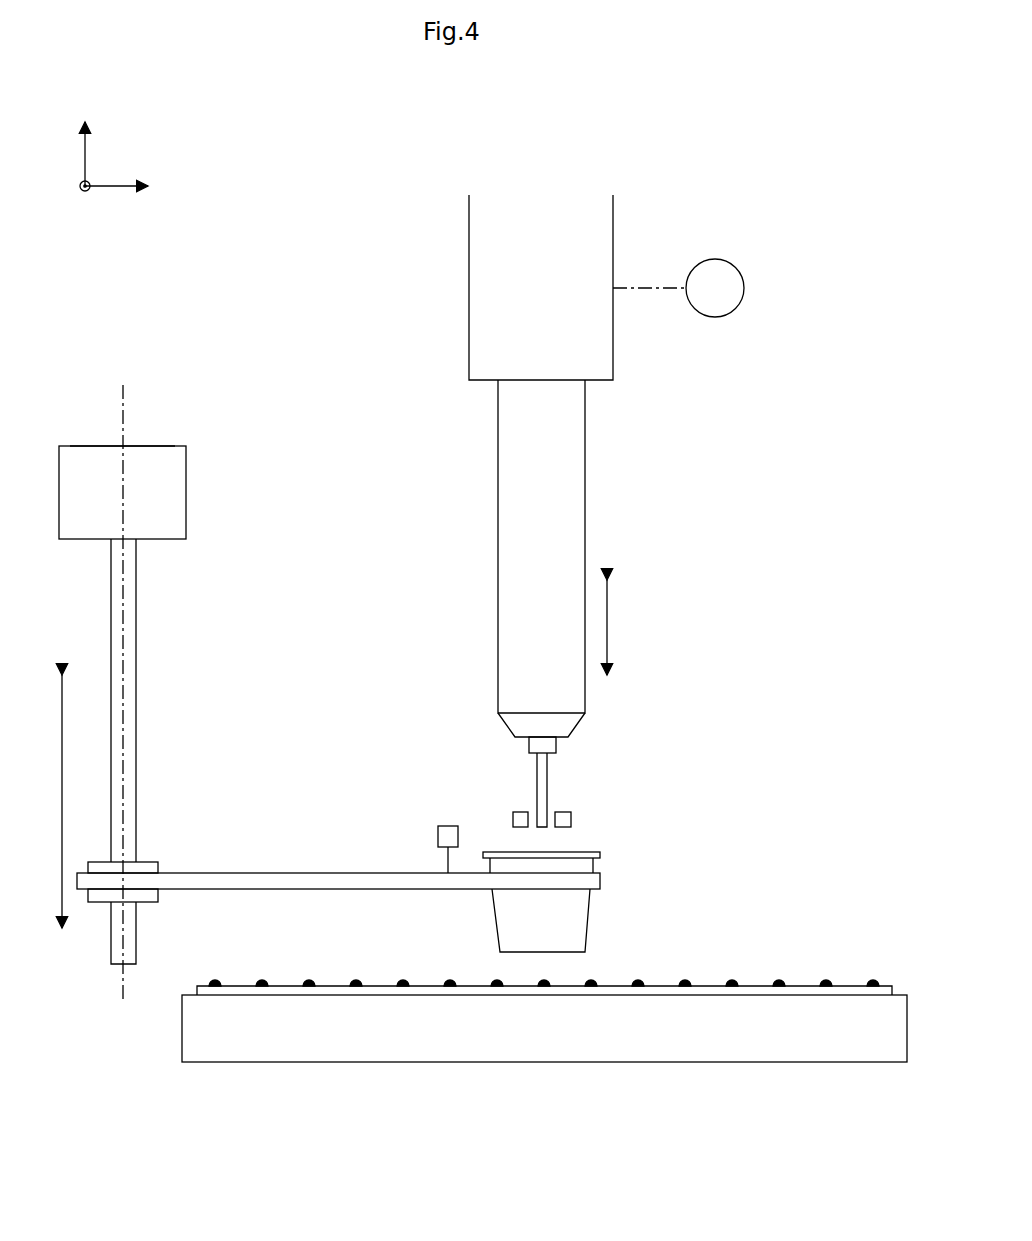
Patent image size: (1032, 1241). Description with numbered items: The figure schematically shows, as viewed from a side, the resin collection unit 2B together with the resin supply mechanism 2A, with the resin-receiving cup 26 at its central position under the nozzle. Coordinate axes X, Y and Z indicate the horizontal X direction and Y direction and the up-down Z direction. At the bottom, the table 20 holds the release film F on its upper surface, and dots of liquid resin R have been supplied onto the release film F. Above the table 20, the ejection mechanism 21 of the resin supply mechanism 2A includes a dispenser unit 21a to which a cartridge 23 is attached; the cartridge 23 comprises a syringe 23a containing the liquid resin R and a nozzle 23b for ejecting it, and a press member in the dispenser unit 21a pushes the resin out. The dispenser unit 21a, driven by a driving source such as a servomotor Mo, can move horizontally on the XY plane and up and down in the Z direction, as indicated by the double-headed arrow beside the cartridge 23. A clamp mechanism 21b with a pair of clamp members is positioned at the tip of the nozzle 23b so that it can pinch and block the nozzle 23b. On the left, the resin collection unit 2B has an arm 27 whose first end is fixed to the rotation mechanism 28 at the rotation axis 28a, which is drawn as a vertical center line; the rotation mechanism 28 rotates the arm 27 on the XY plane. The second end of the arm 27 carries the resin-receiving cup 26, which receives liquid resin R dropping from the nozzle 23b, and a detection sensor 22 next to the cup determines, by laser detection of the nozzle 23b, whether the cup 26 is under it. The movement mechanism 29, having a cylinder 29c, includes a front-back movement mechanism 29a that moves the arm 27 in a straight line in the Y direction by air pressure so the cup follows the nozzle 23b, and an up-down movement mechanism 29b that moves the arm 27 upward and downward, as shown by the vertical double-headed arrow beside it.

The resin supply mechanism 2A is at (717, 396).
The resin collection unit 2B is at (132, 328).
The table 20 is at (195, 1030).
The ejection mechanism 21 is at (610, 520).
The dispenser unit 21a is at (485, 290).
The clamp mechanism 21b is at (563, 812).
The detection sensor 22 is at (438, 835).
The cartridge 23 is at (392, 640).
The syringe 23a is at (512, 657).
The nozzle 23b is at (540, 755).
The resin-receiving cup 26 is at (580, 918).
The arm 27 is at (300, 873).
The rotation mechanism 28 is at (140, 862).
The rotation axis 28a is at (122, 678).
The movement mechanism 29 is at (190, 460).
The front-back movement mechanism 29a is at (168, 502).
The up-down movement mechanism 29b is at (137, 678).
The cylinder 29c is at (93, 456).
The servomotor Mo is at (678, 288).
The release film F is at (750, 983).
The liquid resin R is at (308, 980).
The X direction X is at (128, 189).
The Y direction Y is at (71, 197).
The Z direction Z is at (84, 137).